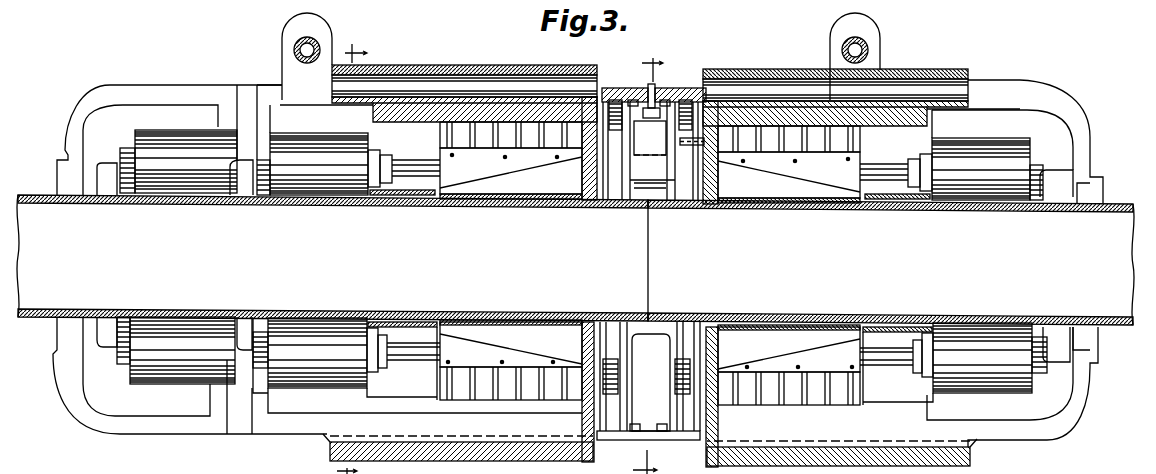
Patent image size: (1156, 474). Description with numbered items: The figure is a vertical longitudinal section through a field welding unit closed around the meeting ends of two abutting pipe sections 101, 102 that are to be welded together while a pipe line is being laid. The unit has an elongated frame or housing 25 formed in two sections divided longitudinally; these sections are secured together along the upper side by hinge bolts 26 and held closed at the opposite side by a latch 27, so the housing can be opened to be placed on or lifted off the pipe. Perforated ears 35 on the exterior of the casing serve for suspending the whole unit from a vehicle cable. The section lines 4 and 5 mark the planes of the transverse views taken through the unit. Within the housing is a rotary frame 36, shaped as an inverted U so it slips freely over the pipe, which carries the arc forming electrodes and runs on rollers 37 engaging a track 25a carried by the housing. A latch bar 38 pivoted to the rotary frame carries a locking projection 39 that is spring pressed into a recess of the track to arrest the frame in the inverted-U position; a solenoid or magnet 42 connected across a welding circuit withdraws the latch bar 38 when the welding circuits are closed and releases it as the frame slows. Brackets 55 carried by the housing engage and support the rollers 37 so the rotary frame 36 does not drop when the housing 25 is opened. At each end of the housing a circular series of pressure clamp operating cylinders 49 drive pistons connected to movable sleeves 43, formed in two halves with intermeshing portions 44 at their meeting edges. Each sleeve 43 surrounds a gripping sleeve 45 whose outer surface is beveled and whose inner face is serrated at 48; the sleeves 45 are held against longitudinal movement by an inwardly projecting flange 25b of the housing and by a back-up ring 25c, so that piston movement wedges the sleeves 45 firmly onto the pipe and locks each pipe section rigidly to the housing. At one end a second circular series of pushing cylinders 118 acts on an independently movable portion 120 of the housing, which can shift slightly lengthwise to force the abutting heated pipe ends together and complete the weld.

The section line 4- 4 is at (352, 250).
The section line 5- 5 is at (648, 257).
The frame or housing 25 is at (987, 98).
The track 25a is at (678, 438).
The inwardly projecting flange 25b is at (592, 201).
The back-up ring 25c is at (398, 192).
The hinge bolts 26 is at (448, 84).
The latch 27 is at (650, 454).
The perforated ears 35 is at (323, 40).
The rotary frame 36 is at (650, 334).
The rollers 37 is at (614, 100).
The latch bar 38 is at (641, 106).
The locking projection 39 is at (653, 86).
The solenoid or magnet 42 is at (650, 154).
The movable sleeve 43 is at (650, 259).
The intermeshing portions 44 is at (487, 128).
The gripping sleeve 45 is at (646, 261).
The serrated inner face 48 is at (548, 196).
The pressure clamp operating cylinders 49 is at (311, 140).
The brackets 55 is at (684, 144).
The first roll shaft 101 is at (332, 258).
The second roll shaft 102 is at (891, 262).
The pushing cylinder 118 is at (170, 131).
The independently movable portion of the housing 120 is at (270, 97).